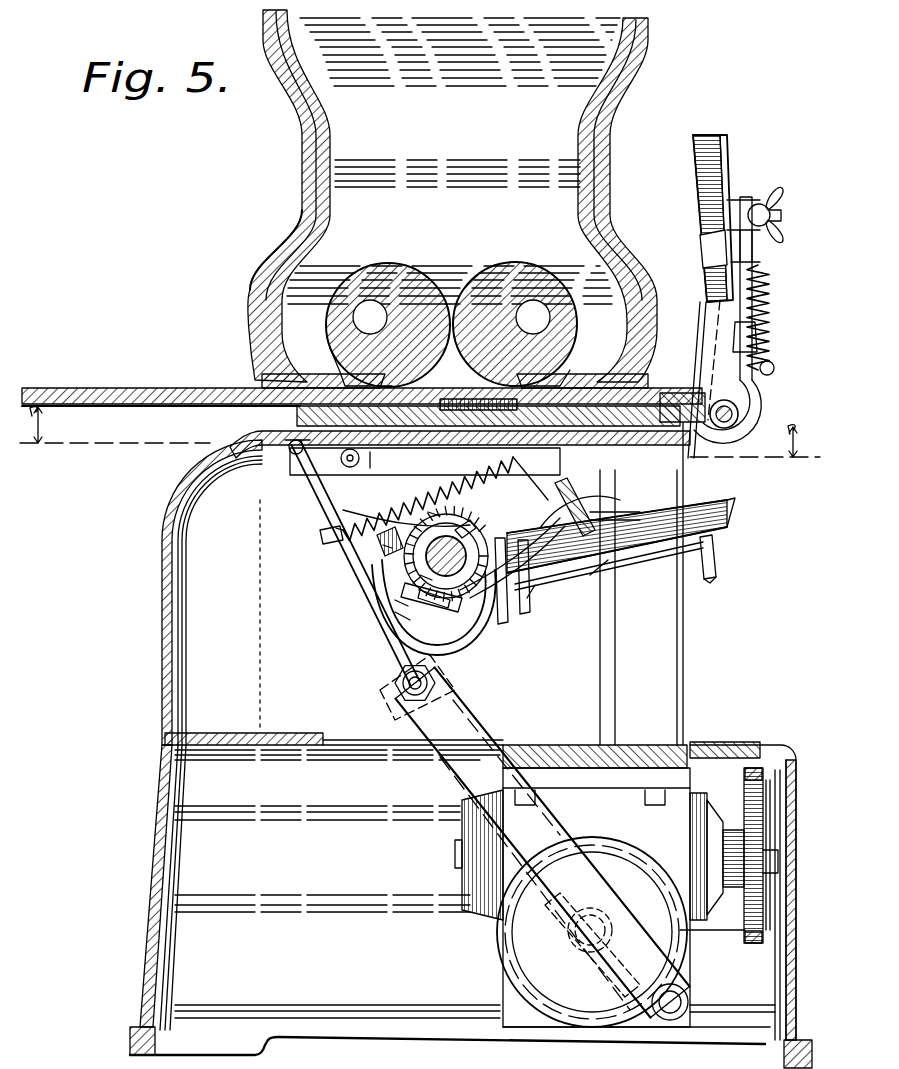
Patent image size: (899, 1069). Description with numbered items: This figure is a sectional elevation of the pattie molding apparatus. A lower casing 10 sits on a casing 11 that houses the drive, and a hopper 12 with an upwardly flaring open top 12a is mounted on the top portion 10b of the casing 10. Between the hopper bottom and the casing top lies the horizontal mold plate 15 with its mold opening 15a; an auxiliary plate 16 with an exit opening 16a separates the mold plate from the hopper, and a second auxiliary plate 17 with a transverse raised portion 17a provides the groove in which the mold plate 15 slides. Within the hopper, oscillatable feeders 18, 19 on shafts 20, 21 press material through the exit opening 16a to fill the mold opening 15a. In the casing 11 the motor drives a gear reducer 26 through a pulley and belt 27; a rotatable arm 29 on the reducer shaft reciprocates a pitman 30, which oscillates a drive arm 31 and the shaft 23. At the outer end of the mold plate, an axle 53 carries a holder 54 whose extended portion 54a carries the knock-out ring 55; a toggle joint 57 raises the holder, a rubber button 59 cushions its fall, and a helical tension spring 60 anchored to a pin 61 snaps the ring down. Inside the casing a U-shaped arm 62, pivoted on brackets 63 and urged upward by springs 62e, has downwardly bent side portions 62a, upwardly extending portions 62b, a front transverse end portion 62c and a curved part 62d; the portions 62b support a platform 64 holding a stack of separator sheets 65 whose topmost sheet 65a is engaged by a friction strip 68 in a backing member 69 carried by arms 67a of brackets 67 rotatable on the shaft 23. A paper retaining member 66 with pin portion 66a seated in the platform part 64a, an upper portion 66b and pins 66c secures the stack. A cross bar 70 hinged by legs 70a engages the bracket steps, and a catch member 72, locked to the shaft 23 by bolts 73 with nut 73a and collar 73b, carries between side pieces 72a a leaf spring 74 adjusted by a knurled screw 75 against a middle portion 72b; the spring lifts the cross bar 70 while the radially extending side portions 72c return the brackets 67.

The lower casing 10 is at (165, 625).
The top portion of the casing 10b is at (262, 433).
The casing 11 is at (158, 856).
The hopper 12 is at (548, 113).
The upwardly flaring open top 12a is at (282, 284).
The mold plate 15 is at (90, 388).
The mold opening 15a is at (565, 398).
The auxiliary plate 16 is at (318, 410).
The exit opening 16a is at (455, 399).
The second auxiliary plate 17 is at (300, 413).
The transverse raised portion 17a is at (350, 370).
The oscillatable feeder 18 is at (398, 282).
The oscillatable feeder 19 is at (496, 290).
The shaft 20 is at (372, 305).
The shaft 21 is at (533, 302).
The shaft 23 is at (428, 560).
The gear reducer 26 is at (488, 944).
The pulley and belt 27 is at (747, 767).
The rotatable arm 29 is at (560, 942).
The pitman 30 is at (463, 730).
The drive arm 31 is at (392, 658).
The axle 53 is at (748, 418).
The holder 54 is at (727, 320).
The extended portion 54a is at (770, 376).
The knock-out ring 55 is at (730, 152).
The toggle joint 57 is at (687, 335).
The rubber button 59 is at (758, 335).
The helical tension spring 60 is at (770, 300).
The pin 61 is at (762, 258).
The U-shaped arm 62 is at (403, 593).
The downwardly bent side portions 62a is at (395, 612).
The upwardly extending portions 62b is at (605, 565).
The front transverse end portion 62c is at (714, 555).
The downwardly extending curved part 62d is at (717, 574).
The springs 62e is at (322, 534).
The brackets 63 is at (292, 458).
The platform 64 is at (658, 548).
The downwardly extending part 64a is at (530, 580).
The stack of separator sheets 65 is at (698, 500).
The topmost sheet 65a is at (745, 495).
The paper retaining member 66 is at (512, 558).
The pin portion 66a is at (528, 612).
The upper portion 66b is at (562, 511).
The downwardly extending pins 66c is at (500, 622).
The brackets 67 is at (425, 461).
The arm 67a is at (536, 493).
The friction strip 68 is at (618, 514).
The backing member 69 is at (575, 500).
The cross bar 70 is at (428, 491).
The legs 70a is at (355, 503).
The catch member 72 is at (420, 578).
The side pieces 72a is at (444, 506).
The middle portion 72b is at (377, 548).
The radially extending side portions 72c is at (395, 600).
The bolts 73 is at (418, 612).
The nut 73a is at (468, 525).
The collar 73b is at (418, 596).
The leaf spring 74 is at (343, 510).
The knurled screw 75 is at (383, 546).